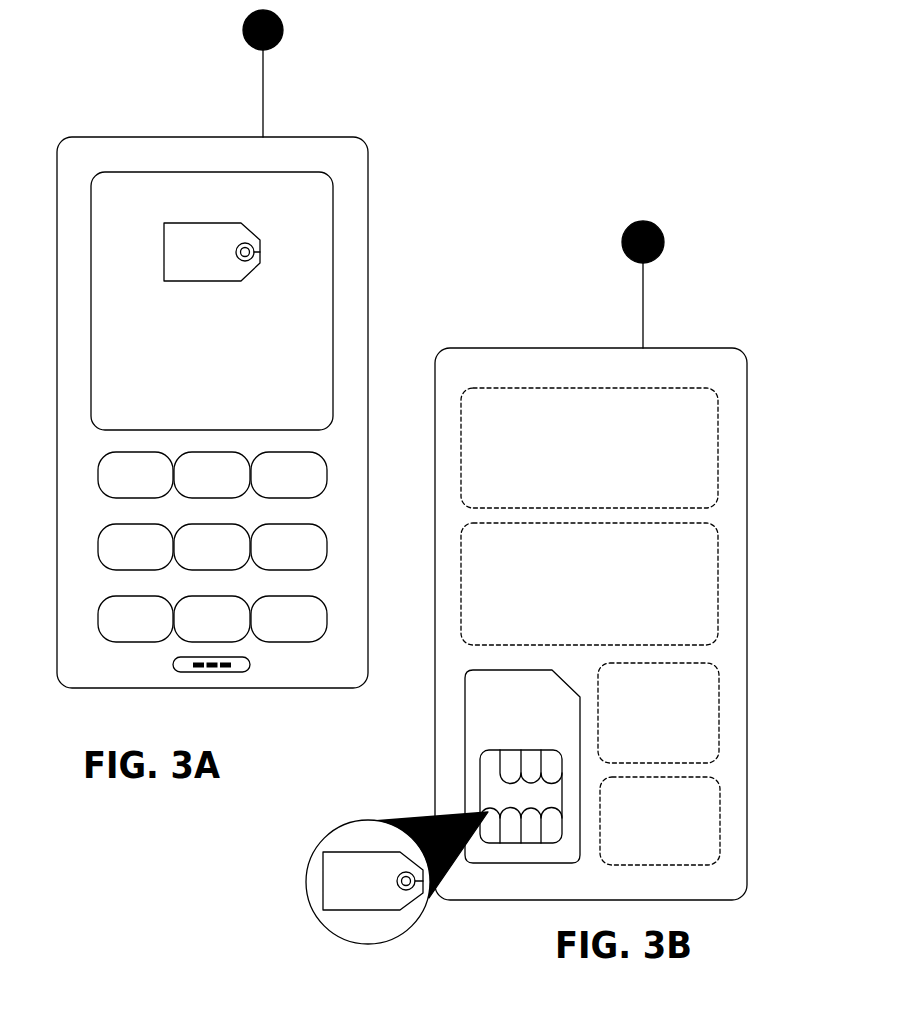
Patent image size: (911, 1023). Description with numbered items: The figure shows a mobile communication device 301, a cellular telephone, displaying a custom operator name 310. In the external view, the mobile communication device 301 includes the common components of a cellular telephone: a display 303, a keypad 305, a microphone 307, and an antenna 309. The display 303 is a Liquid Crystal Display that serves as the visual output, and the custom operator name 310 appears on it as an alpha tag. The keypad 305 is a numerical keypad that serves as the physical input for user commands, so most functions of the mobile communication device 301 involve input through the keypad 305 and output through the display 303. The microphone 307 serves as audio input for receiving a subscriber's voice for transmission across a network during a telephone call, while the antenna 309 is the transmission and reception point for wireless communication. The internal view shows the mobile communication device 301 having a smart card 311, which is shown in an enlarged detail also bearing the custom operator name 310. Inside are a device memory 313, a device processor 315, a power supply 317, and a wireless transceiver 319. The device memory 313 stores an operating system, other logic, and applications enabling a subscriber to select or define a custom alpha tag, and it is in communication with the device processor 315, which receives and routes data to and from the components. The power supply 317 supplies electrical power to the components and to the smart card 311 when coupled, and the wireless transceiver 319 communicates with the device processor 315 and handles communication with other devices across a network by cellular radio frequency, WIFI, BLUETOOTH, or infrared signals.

In FIG. 3A, the mobile communication device 301 is at (209, 377).
In FIG. 3B, the mobile communication device 301 is at (591, 579).
In FIG. 3A, the display 303 is at (333, 200).
In FIG. 3A, the keypad 305 is at (212, 513).
In FIG. 3A, the microphone 307 is at (156, 697).
In FIG. 3A, the antenna 309 is at (351, 73).
In FIG. 3A, the custom operator name 310 is at (188, 274).
In FIG. 3B, the custom operator name 310 is at (330, 900).
In FIG. 3B, the smart card 311 is at (447, 766).
In FIG. 3B, the device memory 313 is at (566, 410).
In FIG. 3B, the device processor 315 is at (638, 551).
In FIG. 3B, the power supply 317 is at (705, 680).
In FIG. 3B, the wireless transceiver 319 is at (706, 789).